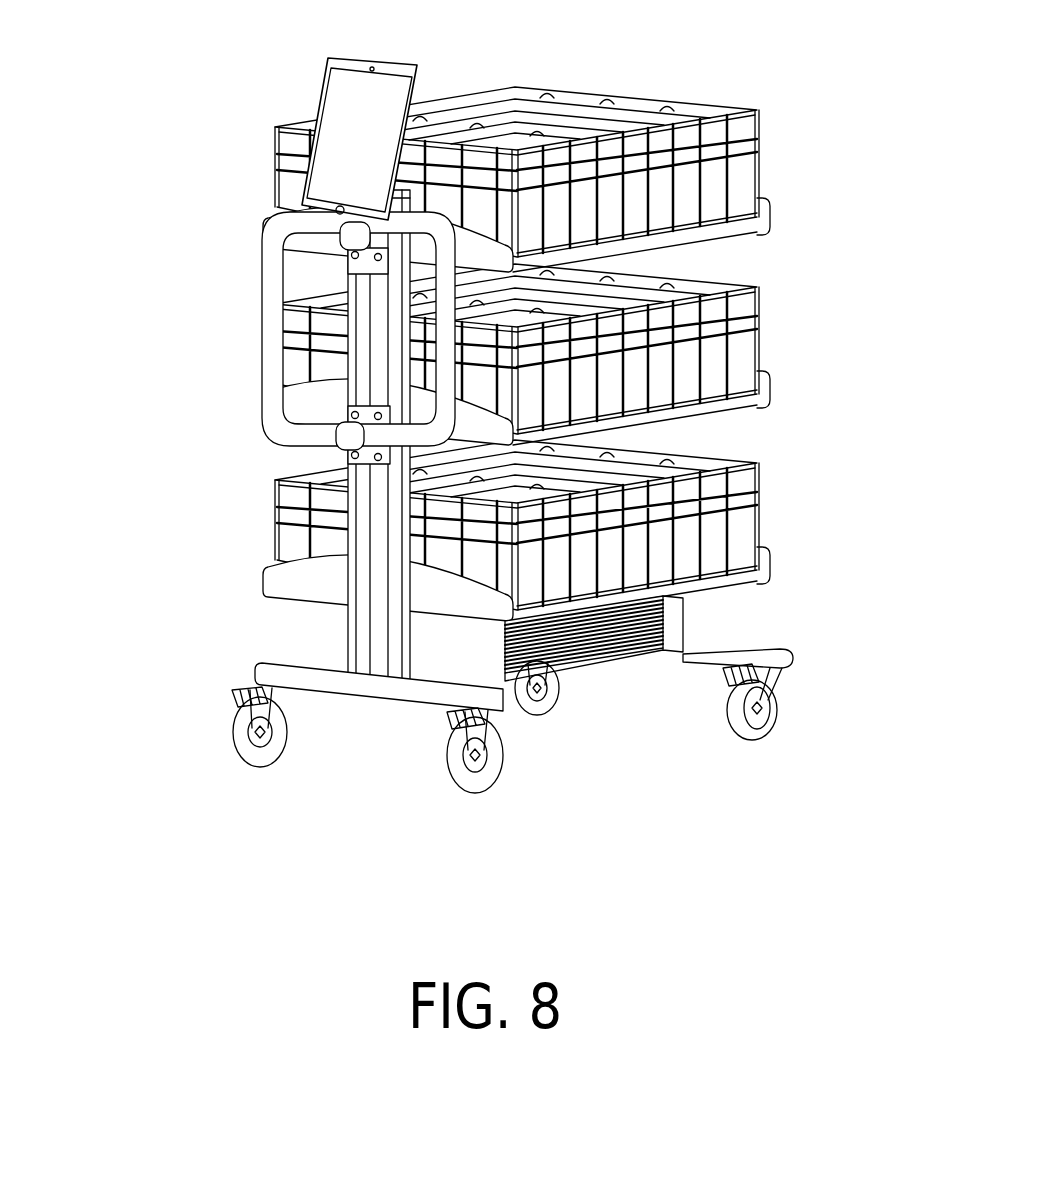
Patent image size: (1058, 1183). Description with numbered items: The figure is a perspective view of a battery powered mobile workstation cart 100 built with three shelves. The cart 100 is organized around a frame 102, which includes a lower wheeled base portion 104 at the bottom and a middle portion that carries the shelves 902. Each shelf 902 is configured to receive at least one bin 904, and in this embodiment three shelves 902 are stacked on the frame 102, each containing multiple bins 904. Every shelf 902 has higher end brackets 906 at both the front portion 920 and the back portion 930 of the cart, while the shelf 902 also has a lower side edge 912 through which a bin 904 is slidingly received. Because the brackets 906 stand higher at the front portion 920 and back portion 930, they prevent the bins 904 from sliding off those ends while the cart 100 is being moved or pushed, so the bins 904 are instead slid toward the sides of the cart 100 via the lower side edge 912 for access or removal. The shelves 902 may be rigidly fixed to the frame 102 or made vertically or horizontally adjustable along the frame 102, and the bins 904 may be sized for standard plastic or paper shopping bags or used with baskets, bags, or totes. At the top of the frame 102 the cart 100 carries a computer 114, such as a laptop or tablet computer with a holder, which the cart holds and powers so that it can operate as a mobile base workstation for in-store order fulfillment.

The battery powered mobile workstation cart 100 is at (502, 407).
The frame 102 is at (266, 243).
The lower wheeled base portion 104 is at (752, 652).
The computer 114 is at (318, 97).
The shelf 902 is at (742, 236).
The bin 904 is at (736, 176).
The higher end bracket 906 is at (288, 580).
The lower side edge 912 is at (735, 407).
The front portion 920 is at (856, 577).
The back portion 930 is at (218, 797).